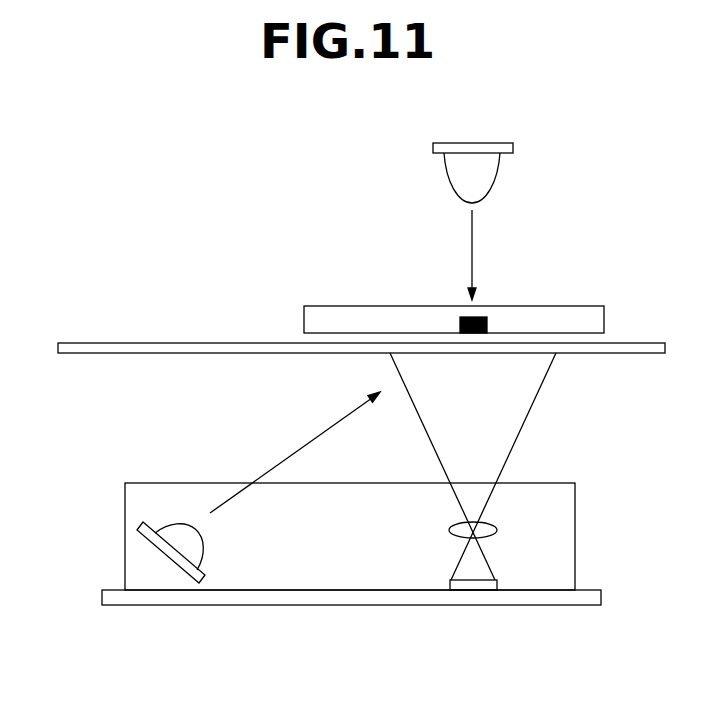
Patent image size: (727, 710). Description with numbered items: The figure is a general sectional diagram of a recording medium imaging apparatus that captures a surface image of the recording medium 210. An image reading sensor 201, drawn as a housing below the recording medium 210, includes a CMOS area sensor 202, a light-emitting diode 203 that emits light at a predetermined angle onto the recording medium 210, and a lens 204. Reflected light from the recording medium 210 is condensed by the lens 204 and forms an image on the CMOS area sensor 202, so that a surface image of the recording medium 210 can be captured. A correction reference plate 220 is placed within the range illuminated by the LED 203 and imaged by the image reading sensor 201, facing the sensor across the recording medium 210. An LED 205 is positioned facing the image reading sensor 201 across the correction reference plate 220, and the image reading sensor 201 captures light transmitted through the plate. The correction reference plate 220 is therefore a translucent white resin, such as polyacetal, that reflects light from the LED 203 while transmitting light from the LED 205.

The image reading sensor 201 is at (575, 512).
The CMOS area sensor 202 is at (470, 592).
The light-emitting diode (LED) 203 is at (170, 559).
The lens 204 is at (449, 530).
The LED 205 is at (498, 178).
The recording medium 210 is at (109, 353).
The correction reference plate 220 is at (304, 312).